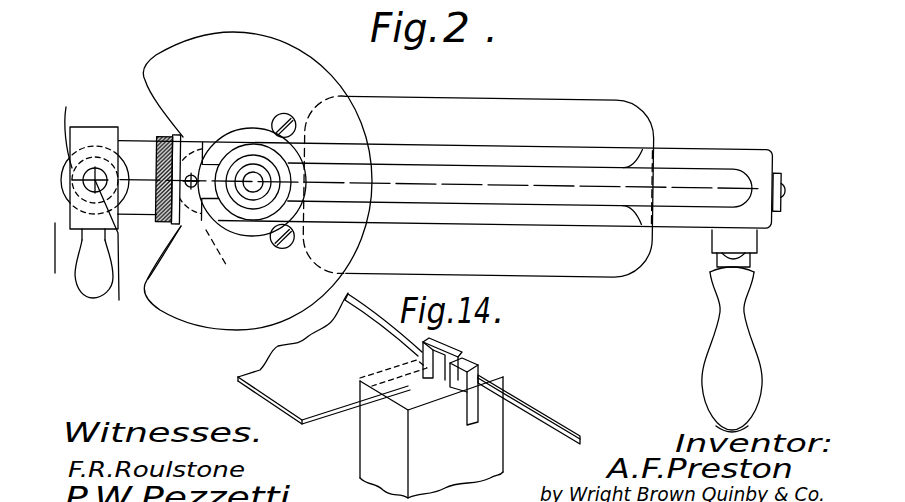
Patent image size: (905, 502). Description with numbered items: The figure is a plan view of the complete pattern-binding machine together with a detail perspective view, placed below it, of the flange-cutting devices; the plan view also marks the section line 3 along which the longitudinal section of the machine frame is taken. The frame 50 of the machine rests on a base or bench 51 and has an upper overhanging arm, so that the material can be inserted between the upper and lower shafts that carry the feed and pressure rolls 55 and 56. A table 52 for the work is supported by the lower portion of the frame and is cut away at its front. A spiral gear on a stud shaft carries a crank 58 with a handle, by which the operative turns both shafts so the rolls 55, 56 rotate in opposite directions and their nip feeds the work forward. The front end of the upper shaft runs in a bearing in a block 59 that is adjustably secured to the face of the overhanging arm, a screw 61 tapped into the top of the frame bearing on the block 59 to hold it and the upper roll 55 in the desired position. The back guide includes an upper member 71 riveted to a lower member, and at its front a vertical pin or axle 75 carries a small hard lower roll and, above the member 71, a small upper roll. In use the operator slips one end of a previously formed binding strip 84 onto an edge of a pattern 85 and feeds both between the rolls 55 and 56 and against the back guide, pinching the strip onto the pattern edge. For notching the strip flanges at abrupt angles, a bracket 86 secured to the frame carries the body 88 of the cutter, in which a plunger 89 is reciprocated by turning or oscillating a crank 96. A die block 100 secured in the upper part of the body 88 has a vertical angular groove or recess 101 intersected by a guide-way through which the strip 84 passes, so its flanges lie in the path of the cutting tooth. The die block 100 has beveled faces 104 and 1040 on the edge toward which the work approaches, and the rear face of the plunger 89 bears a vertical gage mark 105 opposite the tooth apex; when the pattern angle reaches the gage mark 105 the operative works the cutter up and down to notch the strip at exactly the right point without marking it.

In FIG. 2, the shaft 3 is at (787, 183).
In FIG. 2, the frame 50 is at (523, 150).
In FIG. 2, the base or bench 51 is at (615, 123).
In FIG. 2, the table 52 is at (262, 54).
In FIG. 2, the upper feed and pressure roll 55 is at (155, 168).
In FIG. 2, the lower feed and pressure roll 56 is at (153, 133).
In FIG. 2, the crank 58 is at (742, 242).
In FIG. 2, the bearing block 59 is at (189, 226).
In FIG. 2, the screw 61 is at (210, 163).
In FIG. 2, the upper member of back guide 71 is at (228, 130).
In FIG. 2, the vertical pin or axle 75 is at (230, 261).
In FIG. 14, the binding strip 84 is at (510, 397).
In FIG. 14, the pattern 85 is at (310, 368).
In FIG. 2, the bracket 86 is at (146, 199).
In FIG. 2, the body of the cutter 88 is at (81, 126).
In FIG. 14, the body of the cutter 88 is at (375, 448).
In FIG. 14, the plunger 89 is at (450, 390).
In FIG. 2, the crank 96 is at (88, 252).
In FIG. 14, the die block 100 is at (457, 397).
In FIG. 14, the vertical angular groove or recess 101 is at (470, 428).
In FIG. 2, the beveled face 104 is at (62, 205).
In FIG. 14, the beveled face 104 is at (397, 347).
In FIG. 2, the gage mark 105 is at (102, 257).
In FIG. 14, the gage mark 105 is at (455, 352).
In FIG. 2, the beveled face 1040 is at (71, 132).
In FIG. 14, the beveled face 1040 is at (460, 352).